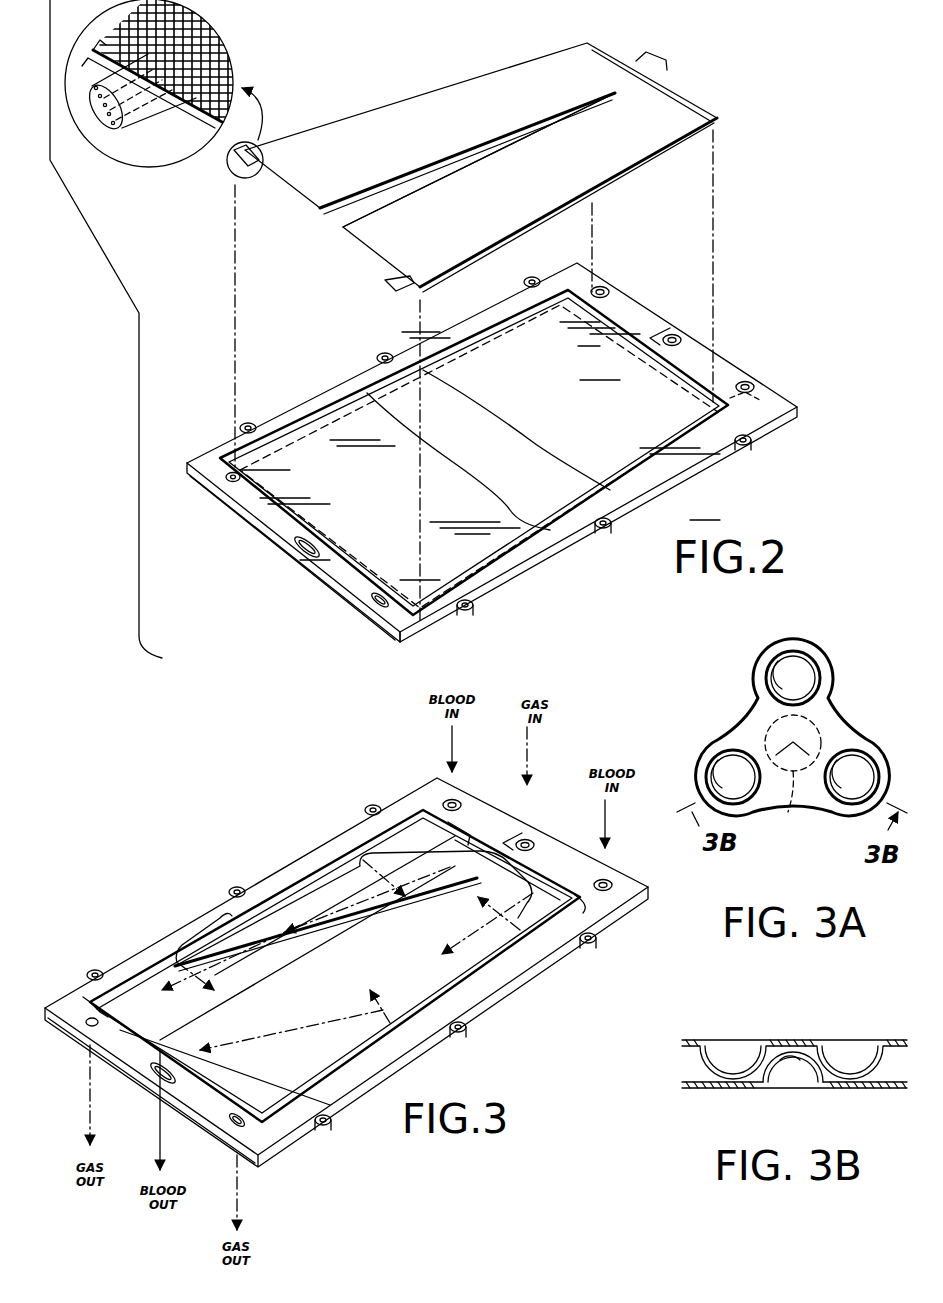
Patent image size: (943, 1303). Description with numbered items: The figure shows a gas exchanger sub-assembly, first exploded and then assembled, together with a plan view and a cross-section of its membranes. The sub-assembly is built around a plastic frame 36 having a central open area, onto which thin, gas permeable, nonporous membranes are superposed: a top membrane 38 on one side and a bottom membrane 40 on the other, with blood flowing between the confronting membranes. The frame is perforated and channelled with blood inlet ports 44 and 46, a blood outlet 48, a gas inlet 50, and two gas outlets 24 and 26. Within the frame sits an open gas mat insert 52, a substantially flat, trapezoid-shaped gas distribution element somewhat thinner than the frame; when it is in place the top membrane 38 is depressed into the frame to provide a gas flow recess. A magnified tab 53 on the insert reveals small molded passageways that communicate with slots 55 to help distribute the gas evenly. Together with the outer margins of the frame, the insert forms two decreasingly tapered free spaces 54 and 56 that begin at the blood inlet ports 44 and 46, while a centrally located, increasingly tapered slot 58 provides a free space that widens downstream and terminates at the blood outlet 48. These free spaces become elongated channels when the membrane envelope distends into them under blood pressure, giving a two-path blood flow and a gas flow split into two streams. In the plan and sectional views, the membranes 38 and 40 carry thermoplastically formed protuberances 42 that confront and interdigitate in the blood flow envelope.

In FIG. 2, the gas outlet 24 is at (247, 470).
In FIG. 3, the gas outlet 24 is at (88, 1034).
In FIG. 2, the gas outlet 26 is at (378, 604).
In FIG. 3, the gas outlet 26 is at (236, 1125).
In FIG. 2, the frame 36 is at (703, 450).
In FIG. 3, the frame 36 is at (547, 958).
In FIG. 2, the top membrane 38 is at (510, 548).
In FIG. 3, the top membrane 38 is at (387, 1057).
In FIG. 3A, the top membrane 38 is at (828, 717).
In FIG. 3B, the top membrane 38 is at (690, 1040).
In FIG. 2, the bottom membrane 40 is at (635, 467).
In FIG. 3, the bottom membrane 40 is at (515, 948).
In FIG. 3B, the bottom membrane 40 is at (690, 1088).
In FIG. 3A, the protuberances 42 is at (807, 673).
In FIG. 3B, the protuberances 42 is at (744, 1060).
In FIG. 2, the blood inlet port 44 is at (606, 292).
In FIG. 3, the blood inlet port 44 is at (456, 803).
In FIG. 2, the blood inlet port 46 is at (750, 385).
In FIG. 3, the blood inlet port 46 is at (610, 886).
In FIG. 2, the blood outlet 48 is at (300, 560).
In FIG. 3, the blood outlet 48 is at (162, 1078).
In FIG. 2, the gas inlet 50 is at (672, 338).
In FIG. 3, the gas inlet 50 is at (531, 848).
In FIG. 2, the open gas mat insert 52 is at (673, 108).
In FIG. 3, the open gas mat insert 52 is at (452, 838).
In FIG. 2, the tab 53 is at (140, 120).
In FIG. 3, the tapered free space 54 is at (413, 823).
In FIG. 2, the slots 55 is at (176, 120).
In FIG. 3, the tapered free space 56 is at (583, 913).
In FIG. 2, the tapered slot 58 is at (318, 212).
In FIG. 3, the tapered slot 58 is at (150, 1065).